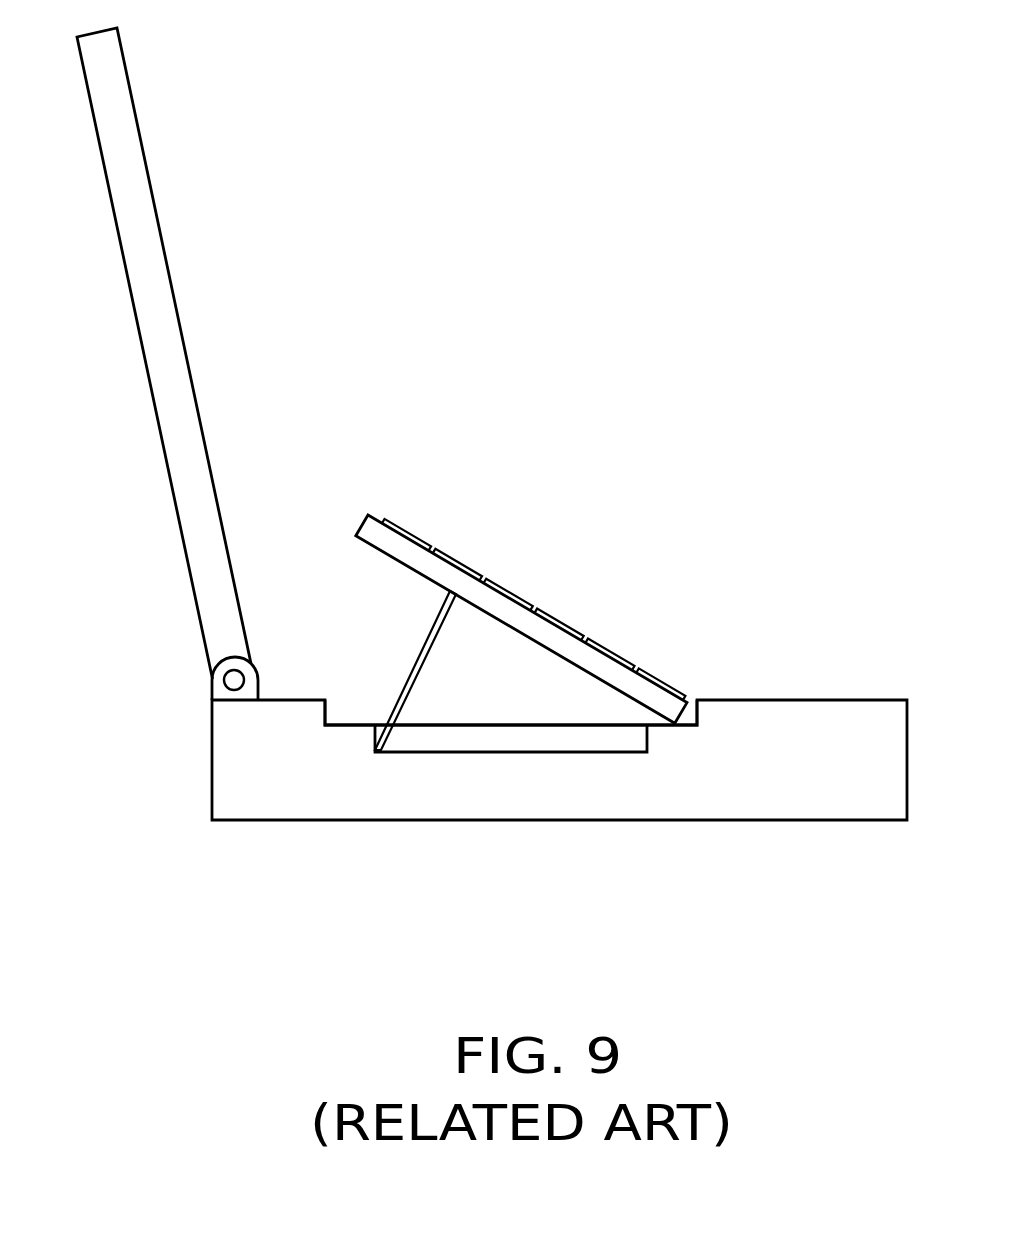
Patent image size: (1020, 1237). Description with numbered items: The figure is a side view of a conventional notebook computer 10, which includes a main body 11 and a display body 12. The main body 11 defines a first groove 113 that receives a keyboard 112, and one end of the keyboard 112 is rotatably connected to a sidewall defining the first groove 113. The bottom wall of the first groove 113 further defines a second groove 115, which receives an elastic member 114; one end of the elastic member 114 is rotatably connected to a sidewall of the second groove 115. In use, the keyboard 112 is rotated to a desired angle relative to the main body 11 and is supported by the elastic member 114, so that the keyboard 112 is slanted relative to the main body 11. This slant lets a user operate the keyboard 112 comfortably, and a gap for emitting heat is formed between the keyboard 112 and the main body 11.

The notebook computer 10 is at (461, 304).
The main body 11 is at (774, 795).
The display body 12 is at (125, 150).
The keyboard 112 is at (462, 583).
The first groove 113 is at (342, 715).
The elastic member 114 is at (428, 637).
The second groove 115 is at (565, 737).